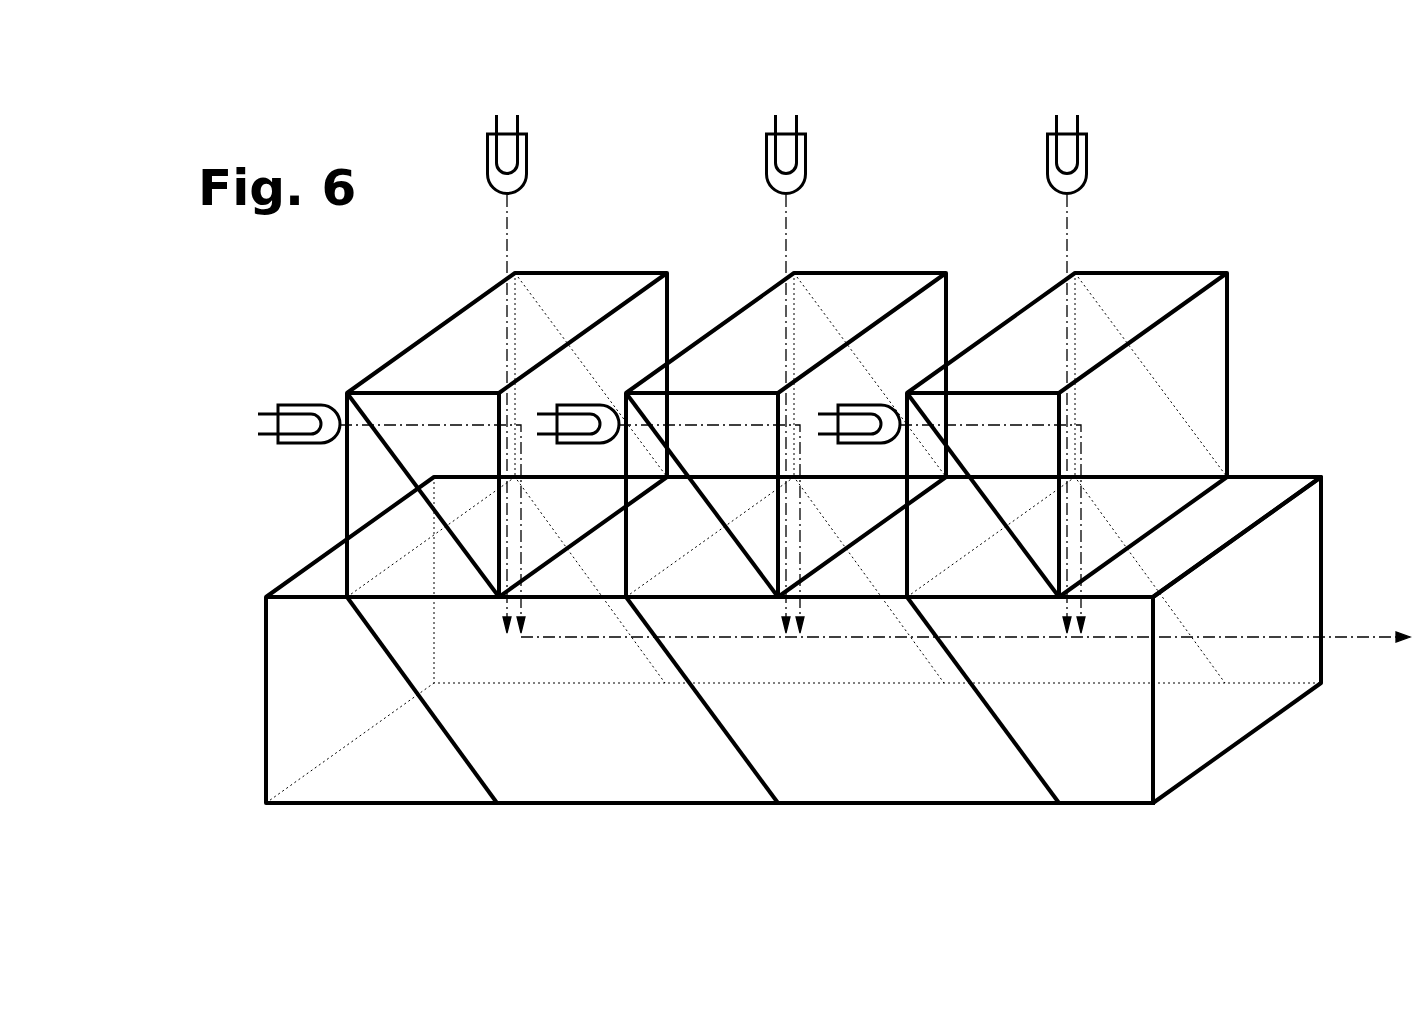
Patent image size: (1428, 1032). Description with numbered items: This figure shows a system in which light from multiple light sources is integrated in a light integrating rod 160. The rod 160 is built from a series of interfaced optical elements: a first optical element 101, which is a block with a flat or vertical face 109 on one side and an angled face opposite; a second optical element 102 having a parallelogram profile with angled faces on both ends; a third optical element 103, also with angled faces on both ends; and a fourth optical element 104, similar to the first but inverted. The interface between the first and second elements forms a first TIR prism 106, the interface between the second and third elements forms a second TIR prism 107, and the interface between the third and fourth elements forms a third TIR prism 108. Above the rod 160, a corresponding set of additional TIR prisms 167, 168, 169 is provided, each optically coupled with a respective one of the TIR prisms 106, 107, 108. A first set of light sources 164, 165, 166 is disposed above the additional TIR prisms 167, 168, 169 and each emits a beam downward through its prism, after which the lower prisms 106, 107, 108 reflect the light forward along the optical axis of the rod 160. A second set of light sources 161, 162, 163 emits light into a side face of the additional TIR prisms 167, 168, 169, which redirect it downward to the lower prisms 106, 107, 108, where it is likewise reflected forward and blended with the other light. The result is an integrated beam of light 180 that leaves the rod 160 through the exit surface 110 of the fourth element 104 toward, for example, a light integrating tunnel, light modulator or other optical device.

The first optical element 101 is at (387, 785).
The second optical element 102 is at (640, 780).
The third optical element 103 is at (908, 777).
The fourth optical element 104 is at (1127, 785).
The first TIR prism 106 is at (467, 777).
The second TIR prism 107 is at (752, 775).
The third TIR prism 108 is at (1022, 770).
The flat or vertical face 109 is at (265, 753).
The exit surface 110 is at (1212, 735).
The light integrating rod 160 is at (233, 580).
The second-set light source 161 is at (302, 443).
The second-set light source 162 is at (587, 447).
The second-set light source 163 is at (867, 447).
The first-set light source 164 is at (528, 158).
The first-set light source 165 is at (807, 157).
The first-set light source 166 is at (1088, 158).
The additional TIR prism 167 is at (390, 445).
The additional TIR prism 168 is at (655, 427).
The additional TIR prism 169 is at (935, 427).
The beam of light 180 is at (1347, 637).